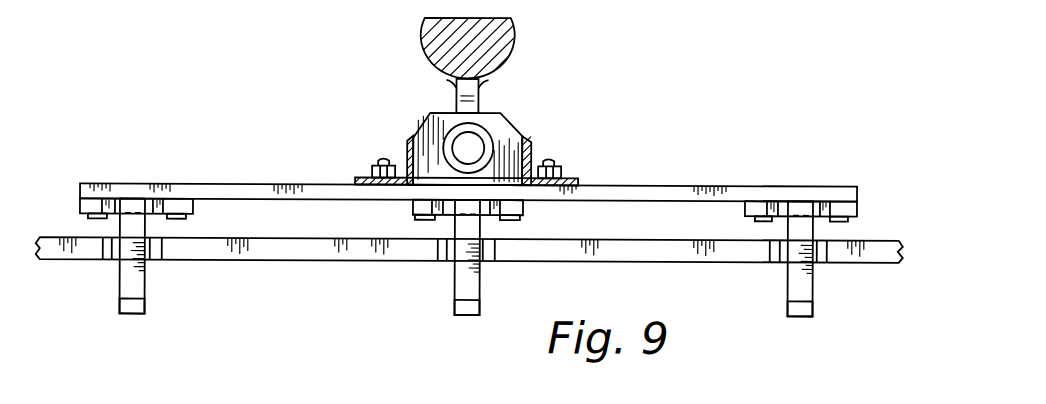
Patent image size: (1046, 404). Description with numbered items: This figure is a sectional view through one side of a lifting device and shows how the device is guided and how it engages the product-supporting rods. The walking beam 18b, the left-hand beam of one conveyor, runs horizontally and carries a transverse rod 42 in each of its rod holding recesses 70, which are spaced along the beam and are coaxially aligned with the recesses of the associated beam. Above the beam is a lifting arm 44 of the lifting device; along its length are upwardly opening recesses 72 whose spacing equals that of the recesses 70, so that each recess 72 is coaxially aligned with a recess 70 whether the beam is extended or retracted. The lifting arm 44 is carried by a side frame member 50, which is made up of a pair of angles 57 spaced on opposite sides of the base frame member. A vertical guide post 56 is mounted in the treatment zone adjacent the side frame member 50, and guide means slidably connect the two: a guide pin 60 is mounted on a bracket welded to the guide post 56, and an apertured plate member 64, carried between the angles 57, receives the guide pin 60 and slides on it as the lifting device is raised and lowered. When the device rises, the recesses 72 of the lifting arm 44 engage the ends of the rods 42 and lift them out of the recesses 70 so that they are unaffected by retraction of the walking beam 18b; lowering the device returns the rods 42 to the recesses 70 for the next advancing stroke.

The left-hand walking beam 18b is at (298, 250).
The transverse rod 42 is at (133, 307).
The lifting arm 44 is at (247, 193).
The side frame member 50 is at (535, 157).
The guide post 56 is at (505, 38).
The angle 57 is at (408, 140).
The guide pin 60 is at (472, 147).
The apertured plate member 64 is at (428, 113).
The recess 70 is at (153, 259).
The upwardly opening recess 72 is at (152, 200).